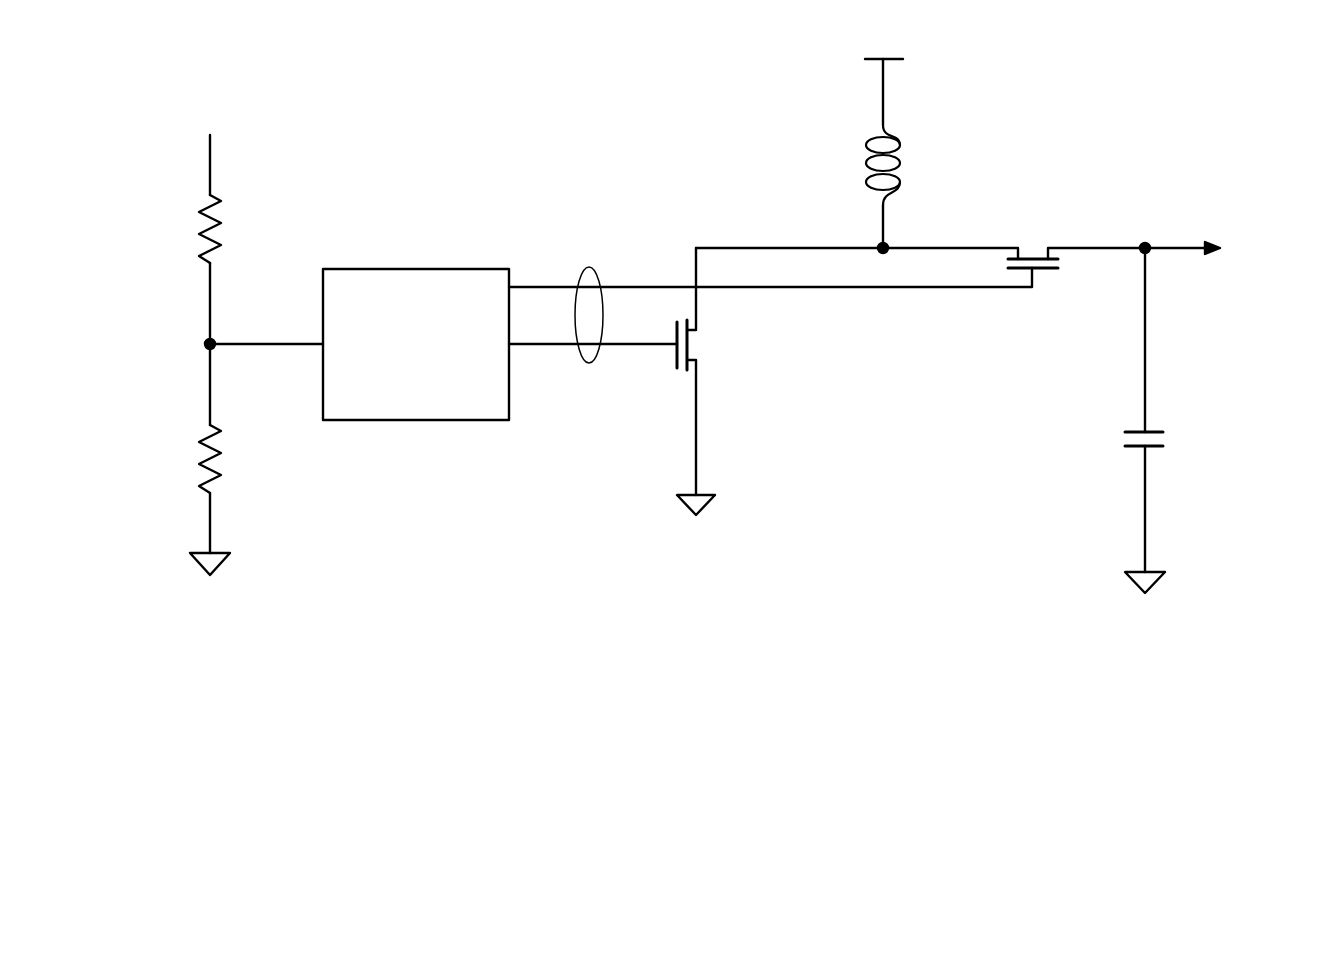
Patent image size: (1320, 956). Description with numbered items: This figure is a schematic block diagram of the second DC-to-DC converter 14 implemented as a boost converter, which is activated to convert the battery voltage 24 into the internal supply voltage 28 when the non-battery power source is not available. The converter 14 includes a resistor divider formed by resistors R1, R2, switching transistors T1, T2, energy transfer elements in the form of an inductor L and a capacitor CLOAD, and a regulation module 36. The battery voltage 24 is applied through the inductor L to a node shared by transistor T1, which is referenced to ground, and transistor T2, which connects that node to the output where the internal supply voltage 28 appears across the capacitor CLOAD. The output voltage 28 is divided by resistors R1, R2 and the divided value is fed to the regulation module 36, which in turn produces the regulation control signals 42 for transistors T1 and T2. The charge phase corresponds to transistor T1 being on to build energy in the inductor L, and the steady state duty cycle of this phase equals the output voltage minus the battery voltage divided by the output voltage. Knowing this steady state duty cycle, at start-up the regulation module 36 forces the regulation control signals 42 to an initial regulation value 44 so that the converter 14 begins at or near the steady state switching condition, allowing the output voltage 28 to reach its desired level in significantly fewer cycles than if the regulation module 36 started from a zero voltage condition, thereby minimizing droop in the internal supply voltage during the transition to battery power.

The second DC-to-DC converter 14 is at (717, 429).
The battery voltage 24 is at (889, 76).
The internal supply voltage 28 is at (723, 196).
The regulation module 36 is at (416, 344).
The regulation control signals 42 is at (726, 233).
The initial regulation value 44 is at (589, 268).
The resistor divider resistor R1 is at (190, 229).
The resistor divider resistor R2 is at (188, 459).
The switching transistor T1 is at (703, 381).
The switching transistor T2 is at (1033, 244).
The inductor L is at (898, 186).
The load capacitor CLOAD is at (1175, 420).